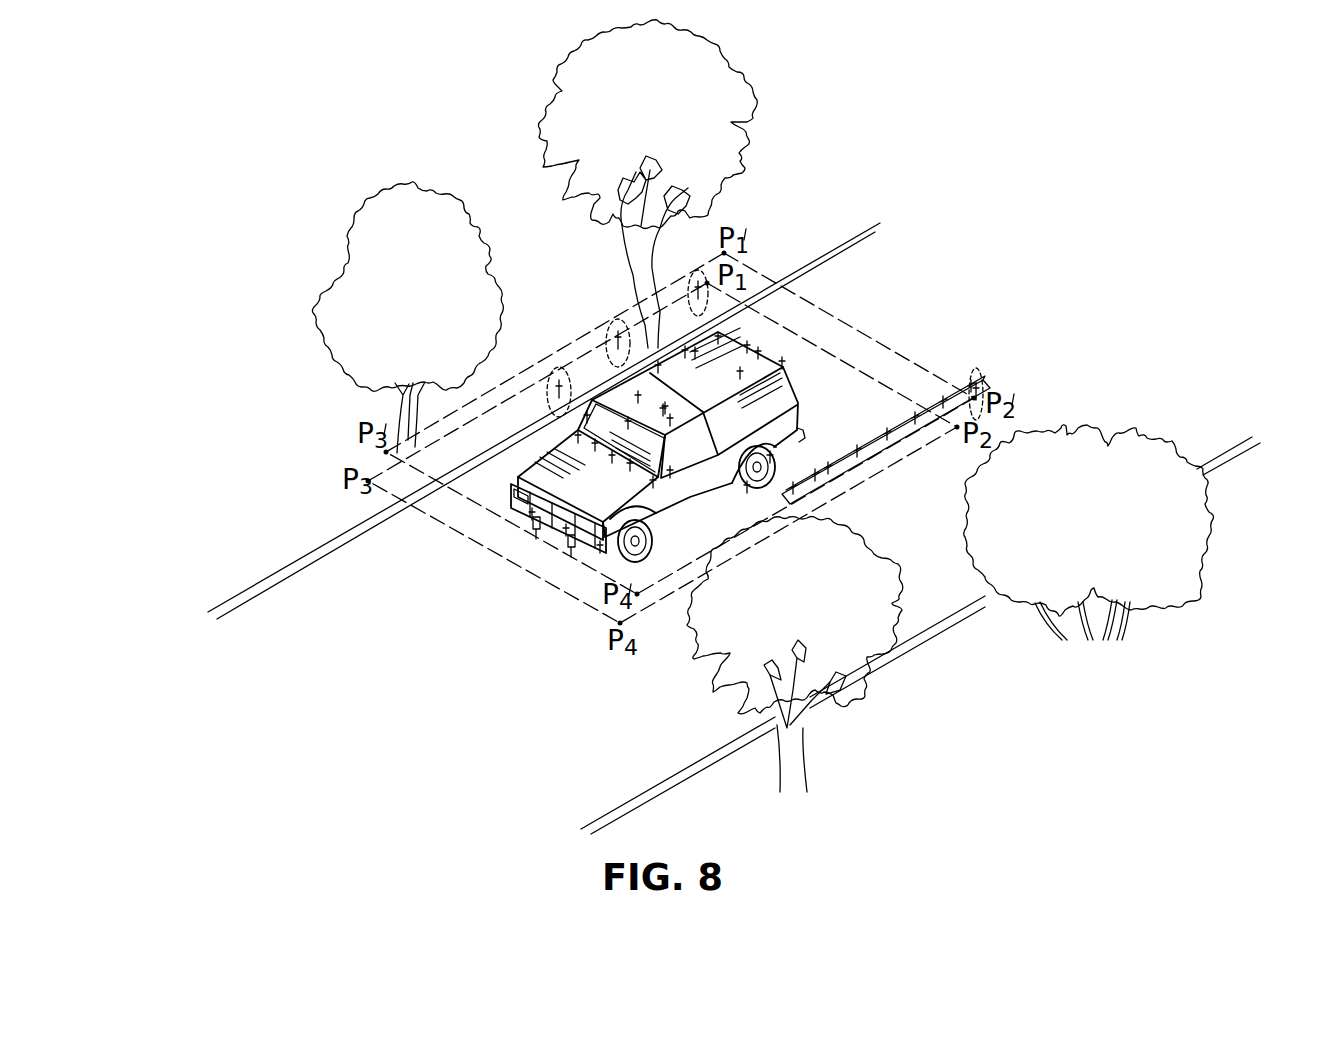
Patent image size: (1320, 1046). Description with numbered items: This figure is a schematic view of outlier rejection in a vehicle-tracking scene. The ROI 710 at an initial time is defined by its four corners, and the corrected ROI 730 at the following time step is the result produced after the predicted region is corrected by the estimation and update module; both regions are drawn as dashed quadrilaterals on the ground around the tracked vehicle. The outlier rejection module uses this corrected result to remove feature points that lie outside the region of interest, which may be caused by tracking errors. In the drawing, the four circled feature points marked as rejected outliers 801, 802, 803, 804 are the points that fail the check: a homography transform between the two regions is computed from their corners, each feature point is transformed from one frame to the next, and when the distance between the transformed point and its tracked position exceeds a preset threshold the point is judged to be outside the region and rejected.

The ROI 710 is at (495, 553).
The corrected ROI 730 is at (583, 564).
The rejected outlier 801 is at (712, 288).
The rejected outlier 802 is at (617, 320).
The rejected outlier 803 is at (558, 367).
The rejected outlier 804 is at (977, 370).